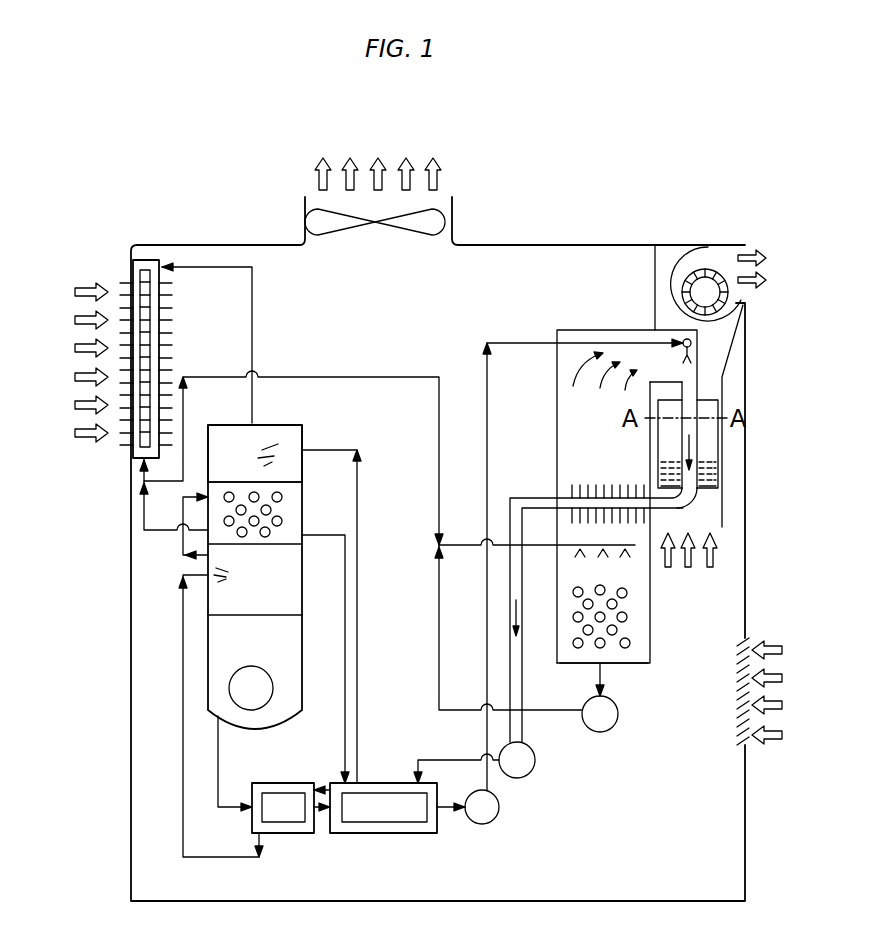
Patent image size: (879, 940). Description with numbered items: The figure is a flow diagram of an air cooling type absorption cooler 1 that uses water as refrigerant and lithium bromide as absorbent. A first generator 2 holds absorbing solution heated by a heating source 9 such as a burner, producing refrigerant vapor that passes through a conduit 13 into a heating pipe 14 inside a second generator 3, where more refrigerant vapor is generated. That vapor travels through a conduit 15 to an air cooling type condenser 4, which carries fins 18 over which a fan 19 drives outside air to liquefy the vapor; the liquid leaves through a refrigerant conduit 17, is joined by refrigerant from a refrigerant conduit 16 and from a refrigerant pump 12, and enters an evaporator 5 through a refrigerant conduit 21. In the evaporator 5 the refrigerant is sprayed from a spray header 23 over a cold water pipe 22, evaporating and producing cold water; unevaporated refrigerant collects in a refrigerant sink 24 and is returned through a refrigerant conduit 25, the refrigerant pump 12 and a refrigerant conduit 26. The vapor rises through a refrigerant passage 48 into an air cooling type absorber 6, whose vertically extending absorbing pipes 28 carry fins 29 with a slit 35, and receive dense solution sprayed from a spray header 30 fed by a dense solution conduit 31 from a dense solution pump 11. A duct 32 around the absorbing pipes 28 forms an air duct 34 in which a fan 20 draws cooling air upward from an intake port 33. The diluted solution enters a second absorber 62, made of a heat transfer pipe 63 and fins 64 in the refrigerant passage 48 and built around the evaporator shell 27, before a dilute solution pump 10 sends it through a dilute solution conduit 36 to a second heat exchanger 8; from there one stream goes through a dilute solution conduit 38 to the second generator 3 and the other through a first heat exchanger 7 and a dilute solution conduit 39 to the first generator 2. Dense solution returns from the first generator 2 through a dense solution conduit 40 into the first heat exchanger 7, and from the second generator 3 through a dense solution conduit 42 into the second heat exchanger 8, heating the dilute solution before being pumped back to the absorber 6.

The air cooling type absorption cooler 1 is at (133, 262).
The first generator 2 is at (302, 570).
The second generator 3 is at (280, 425).
The air cooling type condenser 4 is at (128, 448).
The evaporator 5 is at (650, 586).
The air cooling type absorber 6 is at (690, 396).
The first heat exchanger 7 is at (285, 833).
The second heat exchanger 8 is at (412, 833).
The heating source 9 is at (232, 688).
The dilute solution pump 10 is at (535, 768).
The dense solution pump 11 is at (498, 812).
The refrigerant pump 12 is at (618, 722).
The conduit 13 is at (183, 540).
The heating pipe 14 is at (282, 497).
The conduit 15 is at (252, 290).
The refrigerant conduit 16 is at (143, 513).
The refrigerant conduit 17 is at (143, 478).
The fins 18 is at (128, 282).
The fan 19 is at (437, 233).
The fan 20 is at (680, 297).
The refrigerant conduit 21 is at (448, 542).
The cold water pipe 22 is at (630, 643).
The spray header 23 is at (598, 556).
The refrigerant sink 24 is at (588, 663).
The refrigerant conduit 25 is at (607, 682).
The refrigerant conduit 26 is at (439, 588).
The evaporator shell 27 is at (650, 614).
The absorbing pipes 28 is at (697, 450).
The fins 29 is at (718, 458).
The spray header 30 is at (692, 343).
The dense solution conduit 31 is at (487, 388).
The duct 32 is at (724, 518).
The intake port 33 is at (745, 645).
The air duct 34 is at (700, 504).
The slit 35 is at (708, 482).
The dilute solution conduit 36 is at (455, 760).
The dilute solution conduit 38 is at (357, 492).
The dilute solution conduit 39 is at (183, 698).
The dense solution conduit 40 is at (218, 762).
The dense solution conduit 42 is at (345, 750).
The refrigerant passage 48 is at (557, 438).
The second absorber 62 is at (541, 498).
The heat transfer pipe 63 is at (644, 486).
The fins 64 is at (572, 486).